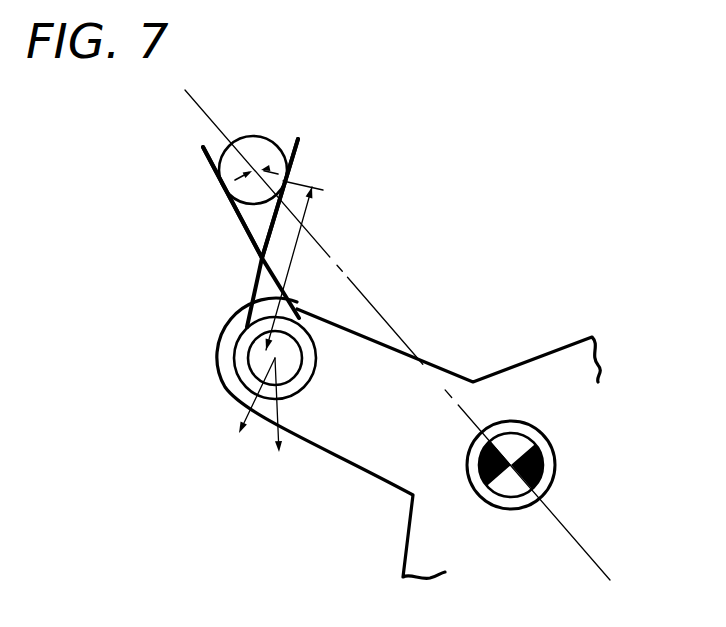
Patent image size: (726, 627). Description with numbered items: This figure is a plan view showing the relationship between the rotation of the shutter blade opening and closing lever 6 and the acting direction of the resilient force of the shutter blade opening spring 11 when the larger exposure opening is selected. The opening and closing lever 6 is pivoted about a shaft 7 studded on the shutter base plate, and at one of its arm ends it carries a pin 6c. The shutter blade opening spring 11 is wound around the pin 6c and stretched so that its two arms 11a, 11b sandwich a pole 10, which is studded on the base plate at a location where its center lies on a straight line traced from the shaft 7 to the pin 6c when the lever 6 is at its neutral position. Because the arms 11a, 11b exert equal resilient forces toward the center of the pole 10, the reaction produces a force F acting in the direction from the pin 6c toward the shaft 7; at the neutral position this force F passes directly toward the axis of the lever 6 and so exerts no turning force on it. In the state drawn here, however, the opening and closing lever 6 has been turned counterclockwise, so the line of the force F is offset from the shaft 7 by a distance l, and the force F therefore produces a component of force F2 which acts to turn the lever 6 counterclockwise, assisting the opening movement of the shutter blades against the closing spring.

The shutter blade opening and closing lever 6 is at (537, 388).
The pin 6c is at (298, 371).
The shaft 7 is at (552, 458).
The pole 10 is at (257, 145).
The shutter blade opening spring 11 is at (219, 198).
The arm 11a is at (297, 157).
The arm 11b is at (205, 160).
The force F is at (279, 421).
The component of force F2 is at (248, 410).
The distance l is at (306, 207).